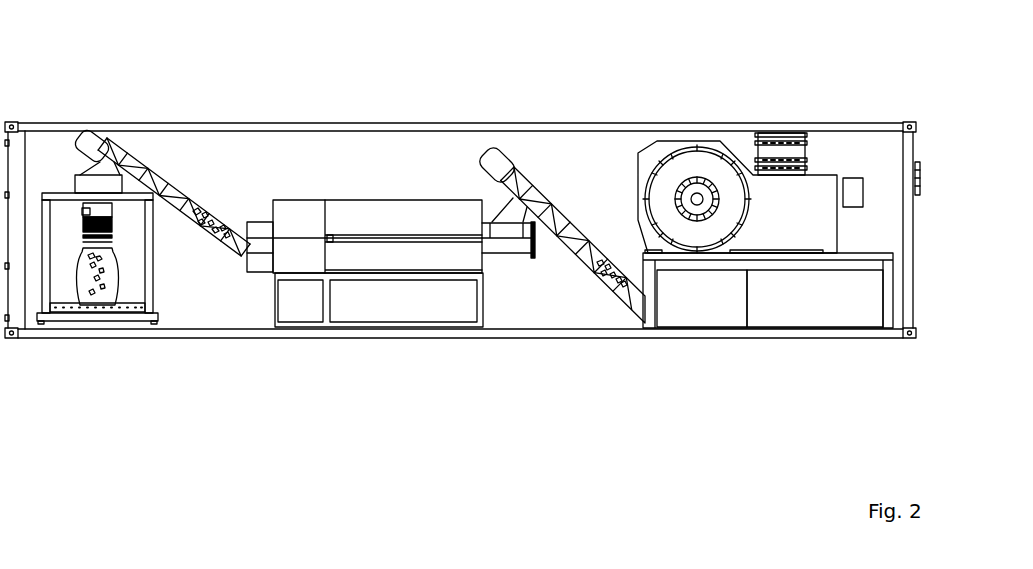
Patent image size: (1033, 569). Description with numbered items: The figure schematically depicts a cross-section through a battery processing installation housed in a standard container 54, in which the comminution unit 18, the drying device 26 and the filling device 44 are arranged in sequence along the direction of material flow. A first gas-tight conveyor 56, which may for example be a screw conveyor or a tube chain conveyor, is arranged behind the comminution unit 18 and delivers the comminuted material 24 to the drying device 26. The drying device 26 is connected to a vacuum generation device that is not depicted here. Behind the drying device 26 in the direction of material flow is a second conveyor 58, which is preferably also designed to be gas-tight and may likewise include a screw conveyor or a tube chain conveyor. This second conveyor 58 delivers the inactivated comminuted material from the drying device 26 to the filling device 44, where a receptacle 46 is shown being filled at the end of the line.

The comminution unit 18 is at (807, 198).
The comminuted material 24 is at (613, 283).
The drying device 26 is at (373, 215).
The filling device 44 is at (50, 190).
The glass bottle 46 is at (80, 288).
The standard container 54 is at (885, 125).
The first gas-tight conveyor 56 is at (513, 173).
The second conveyor 58 is at (97, 142).